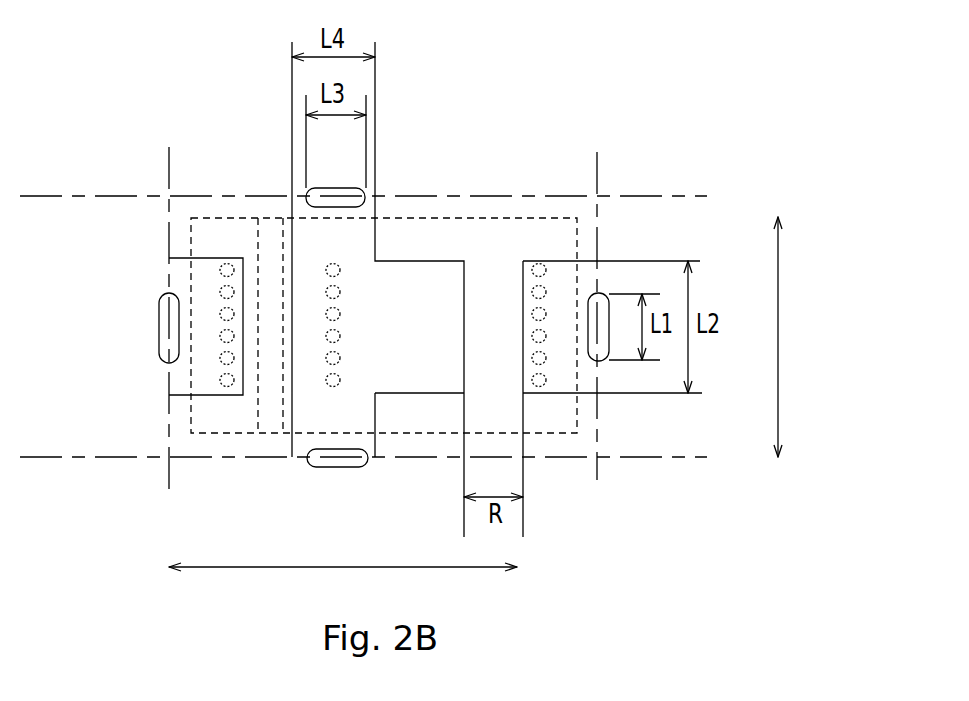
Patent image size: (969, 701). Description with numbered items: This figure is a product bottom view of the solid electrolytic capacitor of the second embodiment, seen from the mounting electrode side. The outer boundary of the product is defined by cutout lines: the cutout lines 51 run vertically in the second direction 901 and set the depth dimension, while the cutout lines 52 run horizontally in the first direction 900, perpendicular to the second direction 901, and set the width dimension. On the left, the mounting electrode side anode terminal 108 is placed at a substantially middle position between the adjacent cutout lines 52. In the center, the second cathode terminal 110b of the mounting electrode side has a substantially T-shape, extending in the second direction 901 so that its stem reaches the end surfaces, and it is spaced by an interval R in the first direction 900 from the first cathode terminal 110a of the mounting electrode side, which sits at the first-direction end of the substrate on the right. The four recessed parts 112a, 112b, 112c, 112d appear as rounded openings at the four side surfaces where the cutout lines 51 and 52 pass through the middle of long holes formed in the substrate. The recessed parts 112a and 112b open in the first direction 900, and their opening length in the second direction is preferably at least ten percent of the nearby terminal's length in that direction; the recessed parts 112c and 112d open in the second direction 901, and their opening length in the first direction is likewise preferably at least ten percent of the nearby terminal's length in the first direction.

The cutout line 51 is at (384, 297).
The cutout line 52 is at (386, 329).
The mounting electrode side anode terminal 108 is at (182, 282).
The first cathode terminal of the mounting electrode side 110a is at (559, 277).
The second cathode terminal of the mounting electrode side 110b is at (355, 256).
The recessed part 112a is at (179, 335).
The recessed part 112b is at (590, 328).
The recessed part 112c is at (332, 188).
The recessed part 112d is at (343, 450).
The first direction 900 is at (343, 550).
The second direction 901 is at (805, 337).